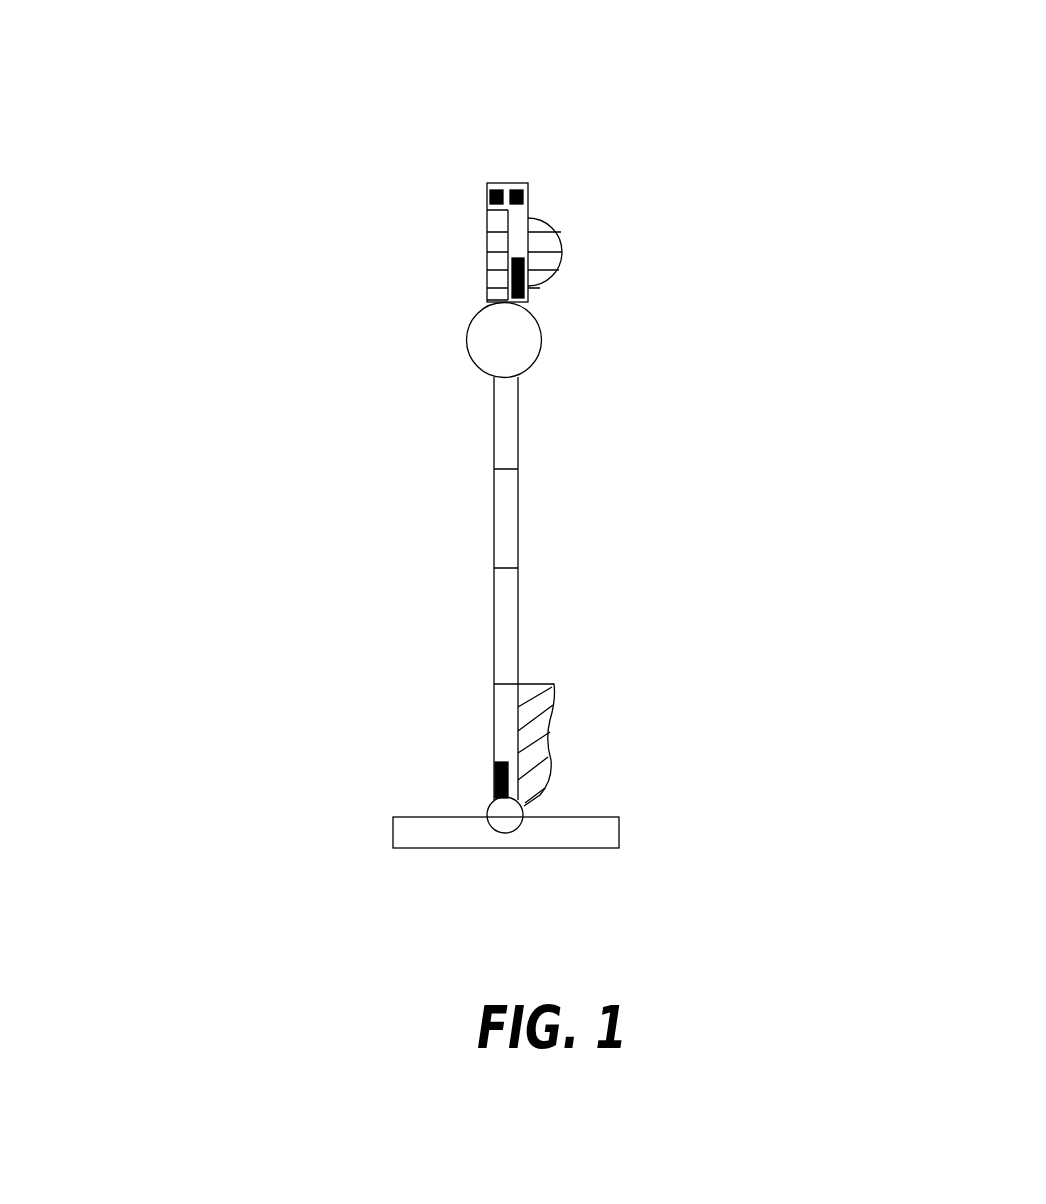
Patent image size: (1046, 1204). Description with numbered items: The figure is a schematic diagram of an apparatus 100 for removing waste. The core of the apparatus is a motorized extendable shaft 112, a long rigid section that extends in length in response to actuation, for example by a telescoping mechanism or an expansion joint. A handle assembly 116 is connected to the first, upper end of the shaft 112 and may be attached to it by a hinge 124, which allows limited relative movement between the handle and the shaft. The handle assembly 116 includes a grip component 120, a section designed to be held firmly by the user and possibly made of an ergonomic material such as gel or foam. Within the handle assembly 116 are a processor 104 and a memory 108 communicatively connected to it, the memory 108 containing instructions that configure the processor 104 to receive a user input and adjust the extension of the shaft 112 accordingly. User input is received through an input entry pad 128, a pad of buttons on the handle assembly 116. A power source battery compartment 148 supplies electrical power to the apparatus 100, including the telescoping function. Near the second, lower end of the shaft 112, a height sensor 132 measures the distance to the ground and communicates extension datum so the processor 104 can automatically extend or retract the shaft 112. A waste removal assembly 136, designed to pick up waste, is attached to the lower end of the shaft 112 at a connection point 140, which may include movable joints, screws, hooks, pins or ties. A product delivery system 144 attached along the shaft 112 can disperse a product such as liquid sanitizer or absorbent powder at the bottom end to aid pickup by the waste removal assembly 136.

The apparatus 100 is at (772, 141).
The processor 104 is at (488, 192).
The memory 108 is at (524, 196).
The motorized extendable shaft 112 is at (518, 508).
The handle assembly 116 is at (500, 183).
The grip component 120 is at (562, 258).
The hinge 124 is at (503, 341).
The input entry pad 128 is at (488, 252).
The height sensor 132 is at (495, 772).
The waste removal assembly 136 is at (393, 832).
The connection point 140 is at (490, 801).
The product delivery system 144 is at (553, 733).
The power source battery compartment 148 is at (528, 288).